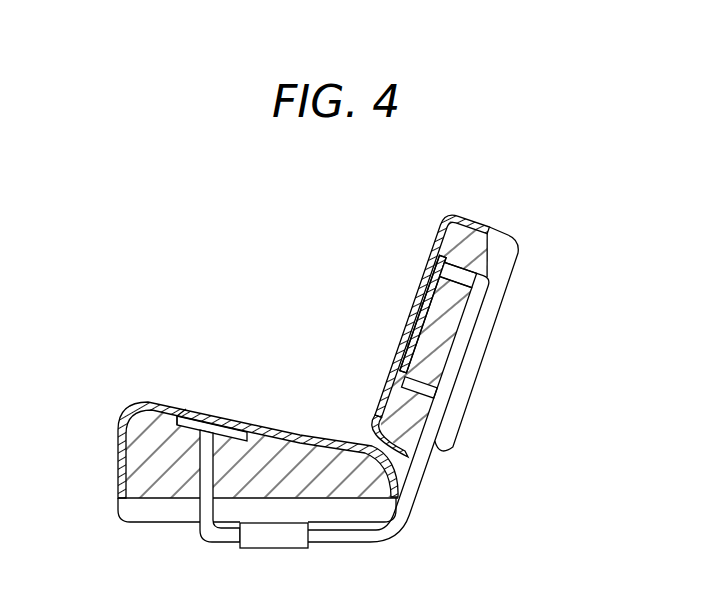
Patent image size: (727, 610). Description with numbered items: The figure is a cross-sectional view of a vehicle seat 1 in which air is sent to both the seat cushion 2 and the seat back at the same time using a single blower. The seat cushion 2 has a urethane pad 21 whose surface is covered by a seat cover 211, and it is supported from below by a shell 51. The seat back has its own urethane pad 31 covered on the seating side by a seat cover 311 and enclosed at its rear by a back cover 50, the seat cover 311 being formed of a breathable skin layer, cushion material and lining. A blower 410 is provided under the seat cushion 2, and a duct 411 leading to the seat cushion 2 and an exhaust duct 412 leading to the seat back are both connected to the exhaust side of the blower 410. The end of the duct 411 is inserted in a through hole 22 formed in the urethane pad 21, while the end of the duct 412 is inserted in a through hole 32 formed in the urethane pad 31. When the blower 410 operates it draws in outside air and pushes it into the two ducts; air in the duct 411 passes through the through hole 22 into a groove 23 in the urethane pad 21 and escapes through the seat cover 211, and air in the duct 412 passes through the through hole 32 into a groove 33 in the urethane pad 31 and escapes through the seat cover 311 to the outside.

The vehicle seat 1 is at (523, 229).
The seat cushion 2 is at (133, 393).
The urethane pad 21 is at (140, 465).
The seat cover 211 is at (122, 430).
The through hole 22 is at (216, 428).
The groove 23 is at (194, 416).
The urethane pad 31 is at (457, 241).
The seat cover 311 is at (402, 333).
The through hole 32 is at (441, 268).
The groove 33 is at (414, 288).
The back cover 50 is at (512, 277).
The seat cushion shell 51 is at (145, 523).
The blower 410 is at (275, 548).
The duct 411 is at (208, 535).
The exhaust duct 412 is at (466, 357).